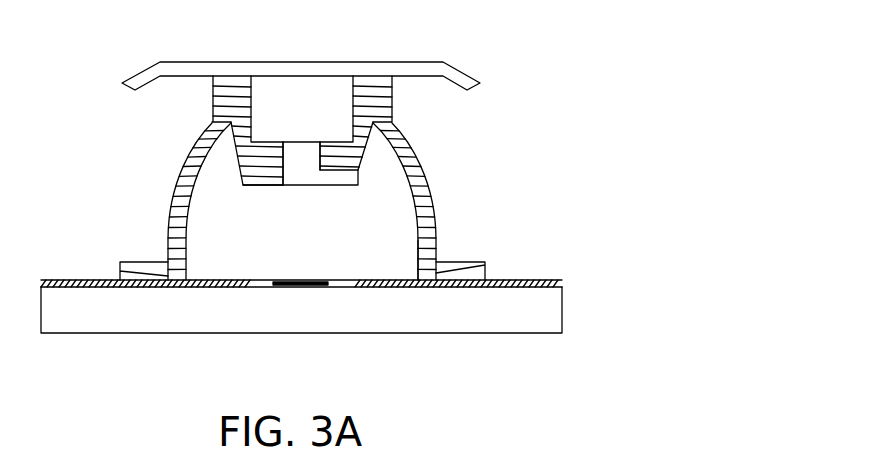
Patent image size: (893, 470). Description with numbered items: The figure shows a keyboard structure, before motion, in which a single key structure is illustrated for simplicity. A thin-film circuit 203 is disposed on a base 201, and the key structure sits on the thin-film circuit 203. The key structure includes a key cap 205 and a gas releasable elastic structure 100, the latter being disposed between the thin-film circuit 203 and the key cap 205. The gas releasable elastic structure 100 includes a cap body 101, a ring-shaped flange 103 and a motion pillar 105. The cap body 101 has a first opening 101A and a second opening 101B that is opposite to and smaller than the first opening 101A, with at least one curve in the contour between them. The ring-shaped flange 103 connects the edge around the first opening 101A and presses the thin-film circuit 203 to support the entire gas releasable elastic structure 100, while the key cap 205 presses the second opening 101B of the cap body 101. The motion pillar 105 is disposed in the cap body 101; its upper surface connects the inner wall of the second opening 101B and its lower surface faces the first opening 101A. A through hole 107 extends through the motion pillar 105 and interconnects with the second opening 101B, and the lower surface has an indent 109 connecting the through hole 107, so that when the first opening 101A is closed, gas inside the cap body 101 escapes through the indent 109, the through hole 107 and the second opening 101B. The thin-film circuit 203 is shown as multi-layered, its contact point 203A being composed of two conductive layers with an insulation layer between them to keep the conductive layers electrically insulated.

The gas releasable elastic structure 100 is at (339, 198).
The cap body 101 is at (418, 162).
The first opening 101A is at (394, 254).
The second opening 101B is at (325, 87).
The ring-shaped flange 103 is at (485, 263).
The motion pillar 105 is at (250, 160).
The through hole 107 is at (297, 174).
The indent 109 is at (332, 182).
The base 201 is at (558, 323).
The thin-film circuit 203 is at (562, 286).
The contact point 203A is at (318, 288).
The key cap 205 is at (455, 71).